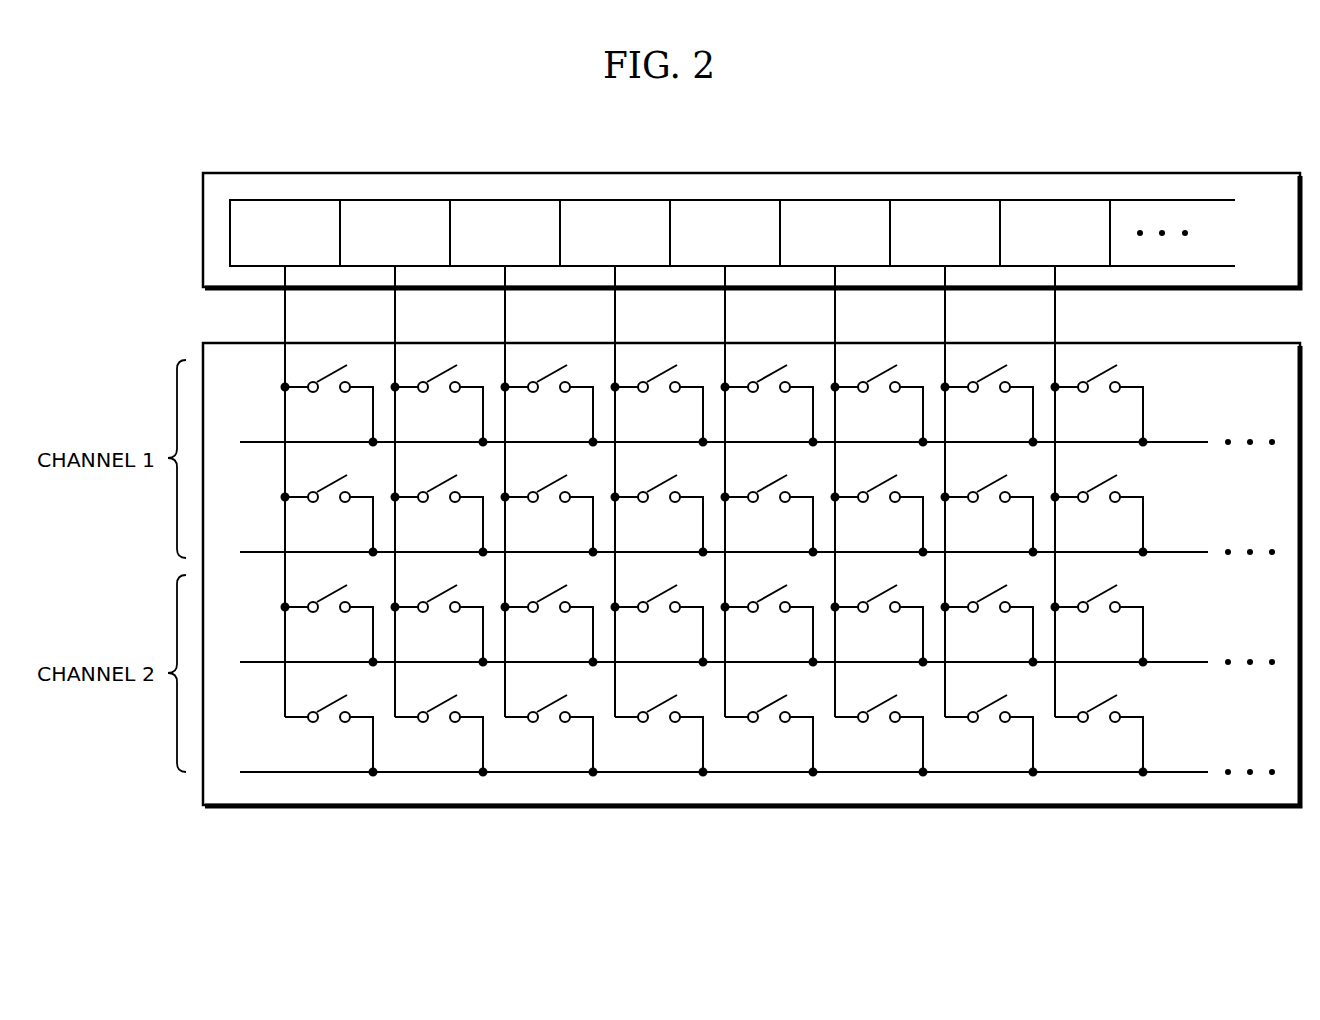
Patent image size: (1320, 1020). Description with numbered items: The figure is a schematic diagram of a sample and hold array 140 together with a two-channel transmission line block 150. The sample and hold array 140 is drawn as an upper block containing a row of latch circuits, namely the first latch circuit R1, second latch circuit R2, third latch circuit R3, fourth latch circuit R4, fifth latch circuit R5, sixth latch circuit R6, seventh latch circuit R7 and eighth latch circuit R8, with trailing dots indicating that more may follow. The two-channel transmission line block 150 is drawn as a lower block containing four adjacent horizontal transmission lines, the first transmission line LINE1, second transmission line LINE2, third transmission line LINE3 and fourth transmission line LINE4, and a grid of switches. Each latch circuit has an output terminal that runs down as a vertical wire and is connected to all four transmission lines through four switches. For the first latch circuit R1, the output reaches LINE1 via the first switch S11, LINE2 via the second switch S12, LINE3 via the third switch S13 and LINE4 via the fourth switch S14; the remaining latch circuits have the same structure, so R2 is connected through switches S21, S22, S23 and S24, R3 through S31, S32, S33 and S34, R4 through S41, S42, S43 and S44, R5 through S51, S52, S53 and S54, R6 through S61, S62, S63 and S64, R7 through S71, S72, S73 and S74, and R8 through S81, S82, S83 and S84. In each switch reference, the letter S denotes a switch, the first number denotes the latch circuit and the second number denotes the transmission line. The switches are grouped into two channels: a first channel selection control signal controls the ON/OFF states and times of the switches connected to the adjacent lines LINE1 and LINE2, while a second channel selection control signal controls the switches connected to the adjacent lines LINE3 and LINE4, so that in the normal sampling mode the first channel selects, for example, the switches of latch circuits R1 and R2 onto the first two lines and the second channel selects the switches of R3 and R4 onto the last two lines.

The sample and hold array 140 is at (1170, 172).
The 2-channel transmission line block 150 is at (1170, 343).
The first latch circuit R1 is at (285, 233).
The second latch circuit R2 is at (395, 233).
The third latch circuit R3 is at (505, 233).
The fourth latch circuit R4 is at (615, 233).
The fifth latch circuit R5 is at (725, 233).
The sixth latch circuit R6 is at (835, 233).
The seventh latch circuit R7 is at (945, 233).
The eighth latch circuit R8 is at (1055, 233).
The first transmission line LINE1 is at (1170, 442).
The second transmission line LINE2 is at (1170, 552).
The third transmission line LINE3 is at (1170, 662).
The fourth transmission line LINE4 is at (1170, 772).
The first switch S11 is at (329, 405).
The switch S21 is at (439, 405).
The switch S31 is at (549, 405).
The switch S41 is at (659, 405).
The switch S51 is at (769, 405).
The switch S61 is at (879, 405).
The switch S71 is at (989, 405).
The switch S81 is at (1099, 405).
The second switch S12 is at (329, 515).
The switch S22 is at (439, 515).
The switch S32 is at (549, 515).
The switch S42 is at (659, 515).
The switch S52 is at (769, 515).
The switch S62 is at (879, 515).
The switch S72 is at (989, 515).
The switch S82 is at (1099, 515).
The third switch S13 is at (329, 625).
The switch S23 is at (439, 625).
The switch S33 is at (549, 625).
The switch S43 is at (659, 625).
The switch S53 is at (769, 625).
The switch S63 is at (879, 625).
The switch S73 is at (989, 625).
The switch S83 is at (1099, 625).
The fourth switch S14 is at (331, 735).
The switch S24 is at (441, 735).
The switch S34 is at (551, 735).
The switch S44 is at (661, 735).
The switch S54 is at (771, 735).
The switch S64 is at (881, 735).
The switch S74 is at (991, 735).
The switch S84 is at (1101, 735).